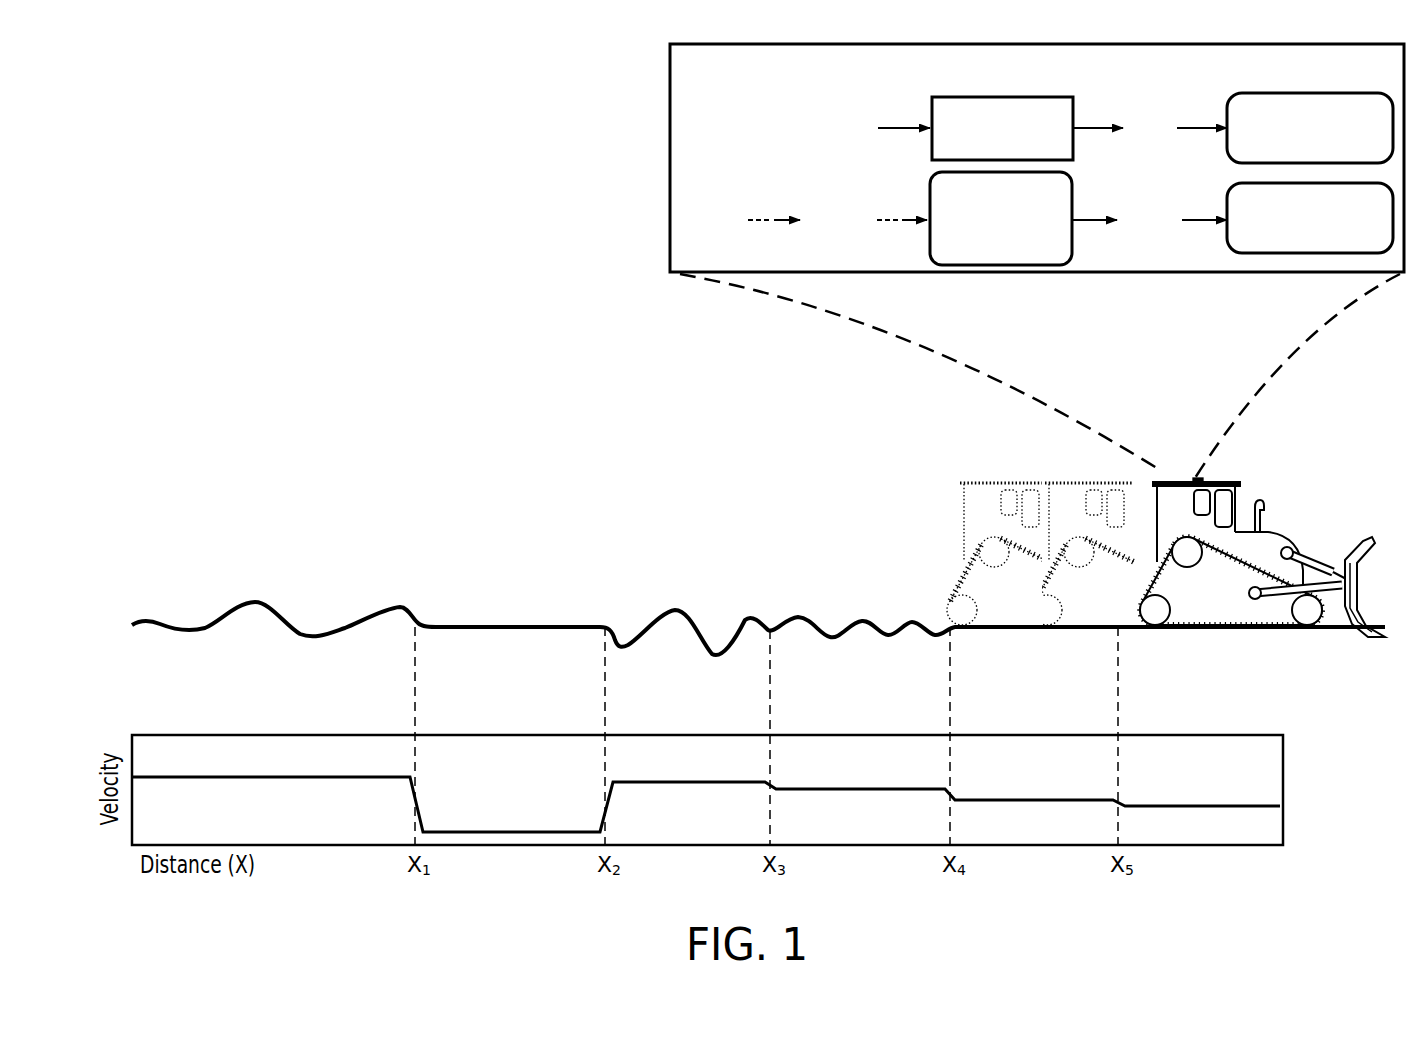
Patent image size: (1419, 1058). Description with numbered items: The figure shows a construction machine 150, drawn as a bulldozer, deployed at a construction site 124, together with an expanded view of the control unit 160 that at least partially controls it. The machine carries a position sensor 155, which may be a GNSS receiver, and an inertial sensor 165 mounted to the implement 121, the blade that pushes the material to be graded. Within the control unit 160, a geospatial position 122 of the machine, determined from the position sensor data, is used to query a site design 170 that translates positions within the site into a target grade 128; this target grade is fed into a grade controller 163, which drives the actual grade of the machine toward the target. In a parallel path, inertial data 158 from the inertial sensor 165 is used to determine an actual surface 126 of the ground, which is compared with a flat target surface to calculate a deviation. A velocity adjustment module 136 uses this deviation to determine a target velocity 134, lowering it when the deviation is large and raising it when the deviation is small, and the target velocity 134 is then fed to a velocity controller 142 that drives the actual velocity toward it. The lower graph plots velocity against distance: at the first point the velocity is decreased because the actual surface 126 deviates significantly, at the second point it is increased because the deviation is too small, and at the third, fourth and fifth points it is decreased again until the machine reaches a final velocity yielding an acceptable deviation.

The control unit 160 is at (1098, 76).
The site design 170 is at (1017, 153).
The velocity adjustment module 136 is at (1045, 255).
The grade controller 163 is at (1323, 153).
The velocity controller 142 is at (1323, 243).
The geospatial position 122 is at (838, 126).
The target grade 128 is at (1151, 127).
The inertial data 158 is at (710, 229).
The actual surface 126 is at (261, 602).
The target velocity 134 is at (270, 777).
The construction site 124 is at (488, 518).
The position sensor 155 is at (1196, 477).
The construction machine 150 is at (1232, 516).
The inertial sensor 165 is at (1352, 545).
The implement 121 is at (1350, 607).